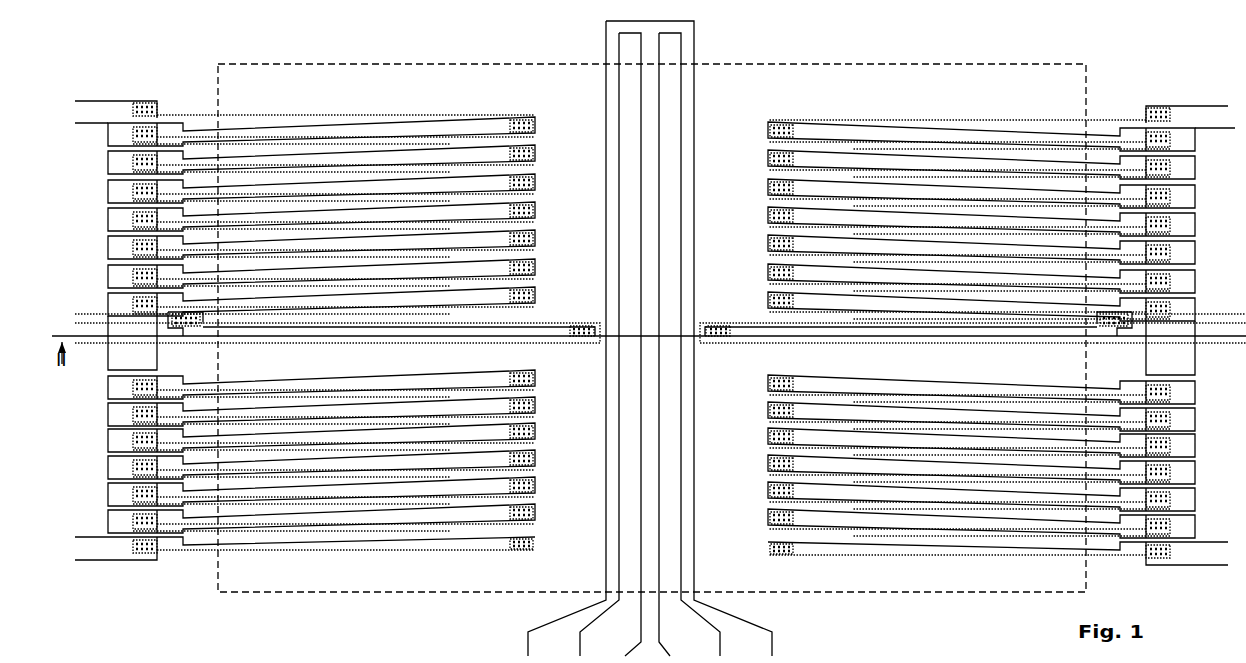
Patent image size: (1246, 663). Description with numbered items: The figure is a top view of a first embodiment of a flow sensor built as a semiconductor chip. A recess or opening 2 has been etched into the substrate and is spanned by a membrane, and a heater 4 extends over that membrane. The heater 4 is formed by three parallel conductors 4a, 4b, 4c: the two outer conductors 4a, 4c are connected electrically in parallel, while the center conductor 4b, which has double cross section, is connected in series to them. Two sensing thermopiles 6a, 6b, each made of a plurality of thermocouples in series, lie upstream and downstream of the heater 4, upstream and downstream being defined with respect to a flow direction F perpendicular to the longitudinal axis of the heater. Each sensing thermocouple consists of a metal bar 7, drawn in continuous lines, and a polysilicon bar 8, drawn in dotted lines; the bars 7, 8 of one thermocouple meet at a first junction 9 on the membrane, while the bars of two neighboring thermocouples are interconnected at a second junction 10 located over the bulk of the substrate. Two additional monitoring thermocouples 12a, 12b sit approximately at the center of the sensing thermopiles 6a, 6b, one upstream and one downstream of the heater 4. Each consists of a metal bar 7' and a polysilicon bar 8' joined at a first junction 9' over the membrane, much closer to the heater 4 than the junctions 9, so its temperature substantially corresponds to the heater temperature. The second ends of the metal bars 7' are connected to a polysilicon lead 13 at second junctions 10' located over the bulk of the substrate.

The recess or opening 2 is at (863, 64).
The heater 4 is at (650, 328).
The outer conductor 4a is at (601, 113).
The center conductor 4b is at (650, 90).
The outer conductor 4c is at (686, 92).
The sensing thermopile 6a is at (305, 292).
The sensing thermopile 6b is at (978, 94).
The metal bar 7 is at (305, 96).
The metal bar 7' is at (650, 183).
The polysilicon bar 8 is at (321, 290).
The polysilicon bar 8' is at (650, 187).
The first junction 9 is at (513, 274).
The first junction 9' is at (641, 309).
The second junction 10 is at (305, 314).
The second junction 10' is at (627, 175).
The monitoring thermocouple 12a is at (558, 354).
The monitoring thermocouple 12b is at (737, 354).
The polysilicon lead 13 is at (100, 312).
The flow direction F is at (363, 42).